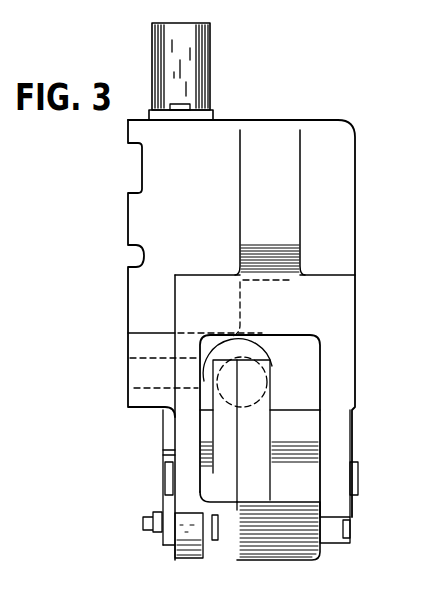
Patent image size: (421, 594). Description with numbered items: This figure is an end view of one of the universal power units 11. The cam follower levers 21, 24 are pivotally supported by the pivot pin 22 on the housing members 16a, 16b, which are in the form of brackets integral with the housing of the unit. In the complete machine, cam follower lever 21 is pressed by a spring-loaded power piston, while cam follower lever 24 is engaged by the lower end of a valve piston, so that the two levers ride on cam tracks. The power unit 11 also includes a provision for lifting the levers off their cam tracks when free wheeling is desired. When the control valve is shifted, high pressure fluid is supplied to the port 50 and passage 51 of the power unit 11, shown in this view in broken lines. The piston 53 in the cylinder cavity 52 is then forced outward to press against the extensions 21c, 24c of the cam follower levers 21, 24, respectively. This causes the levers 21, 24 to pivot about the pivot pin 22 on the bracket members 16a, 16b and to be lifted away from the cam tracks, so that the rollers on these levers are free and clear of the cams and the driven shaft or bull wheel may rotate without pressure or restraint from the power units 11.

The universal power unit 11 is at (358, 154).
The cam follower lever 21 is at (312, 498).
The extension of cam follower lever 21c is at (262, 411).
The pivot pin 22 is at (358, 477).
The cam follower lever 24 is at (208, 494).
The extension of cam follower lever 24c is at (222, 421).
The housing member 16a is at (187, 455).
The housing member 16b is at (347, 428).
The port 50 is at (128, 360).
The passage 51 is at (128, 380).
The cylinder cavity 52 is at (262, 373).
The piston 53 is at (241, 342).